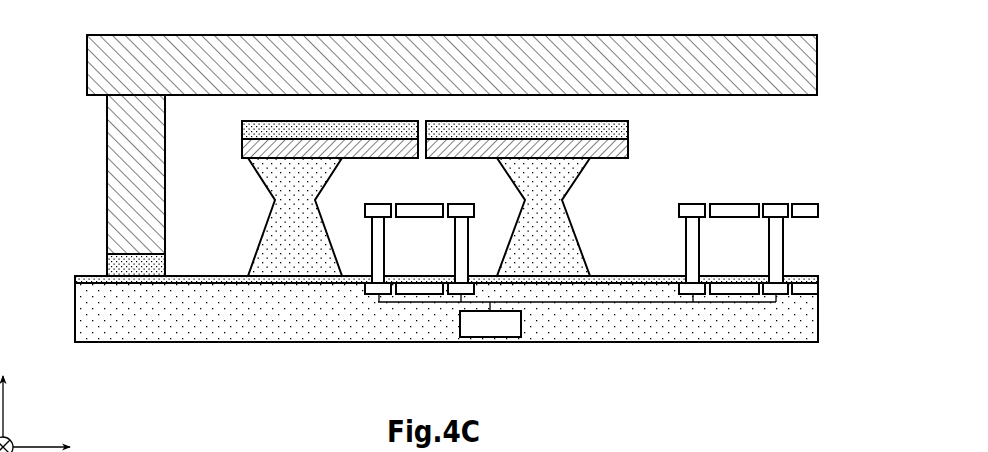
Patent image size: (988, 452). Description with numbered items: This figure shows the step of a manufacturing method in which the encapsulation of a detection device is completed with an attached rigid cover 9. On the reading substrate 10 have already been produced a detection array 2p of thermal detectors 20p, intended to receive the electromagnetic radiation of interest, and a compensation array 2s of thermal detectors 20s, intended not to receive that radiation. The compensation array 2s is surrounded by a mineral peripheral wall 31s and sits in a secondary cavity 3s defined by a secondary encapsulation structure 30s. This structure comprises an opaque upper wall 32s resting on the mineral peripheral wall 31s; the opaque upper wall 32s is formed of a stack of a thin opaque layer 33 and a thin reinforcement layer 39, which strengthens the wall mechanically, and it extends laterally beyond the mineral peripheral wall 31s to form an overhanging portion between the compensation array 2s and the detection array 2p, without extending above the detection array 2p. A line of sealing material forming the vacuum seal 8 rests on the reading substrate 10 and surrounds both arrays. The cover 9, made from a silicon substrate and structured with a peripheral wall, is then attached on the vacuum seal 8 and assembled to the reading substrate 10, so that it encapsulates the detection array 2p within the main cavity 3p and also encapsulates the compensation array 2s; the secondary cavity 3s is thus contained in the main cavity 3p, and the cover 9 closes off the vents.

The cover 9 is at (819, 60).
The vacuum seal 8 is at (105, 265).
The secondary encapsulation structure 30s is at (472, 137).
The opaque upper wall 32s is at (438, 140).
The thin reinforcement layer 39 is at (241, 130).
The thin opaque layer 33 is at (241, 147).
The mineral peripheral wall 31s is at (316, 200).
The secondary cavity 3s is at (465, 192).
The main cavity 3p is at (743, 192).
The reading substrate 10 is at (819, 310).
The thermal detectors of the compensation array 20s is at (413, 327).
The thermal detectors of the detection array 20p is at (731, 327).
The compensation array 2s is at (457, 351).
The detection array 2p is at (788, 353).